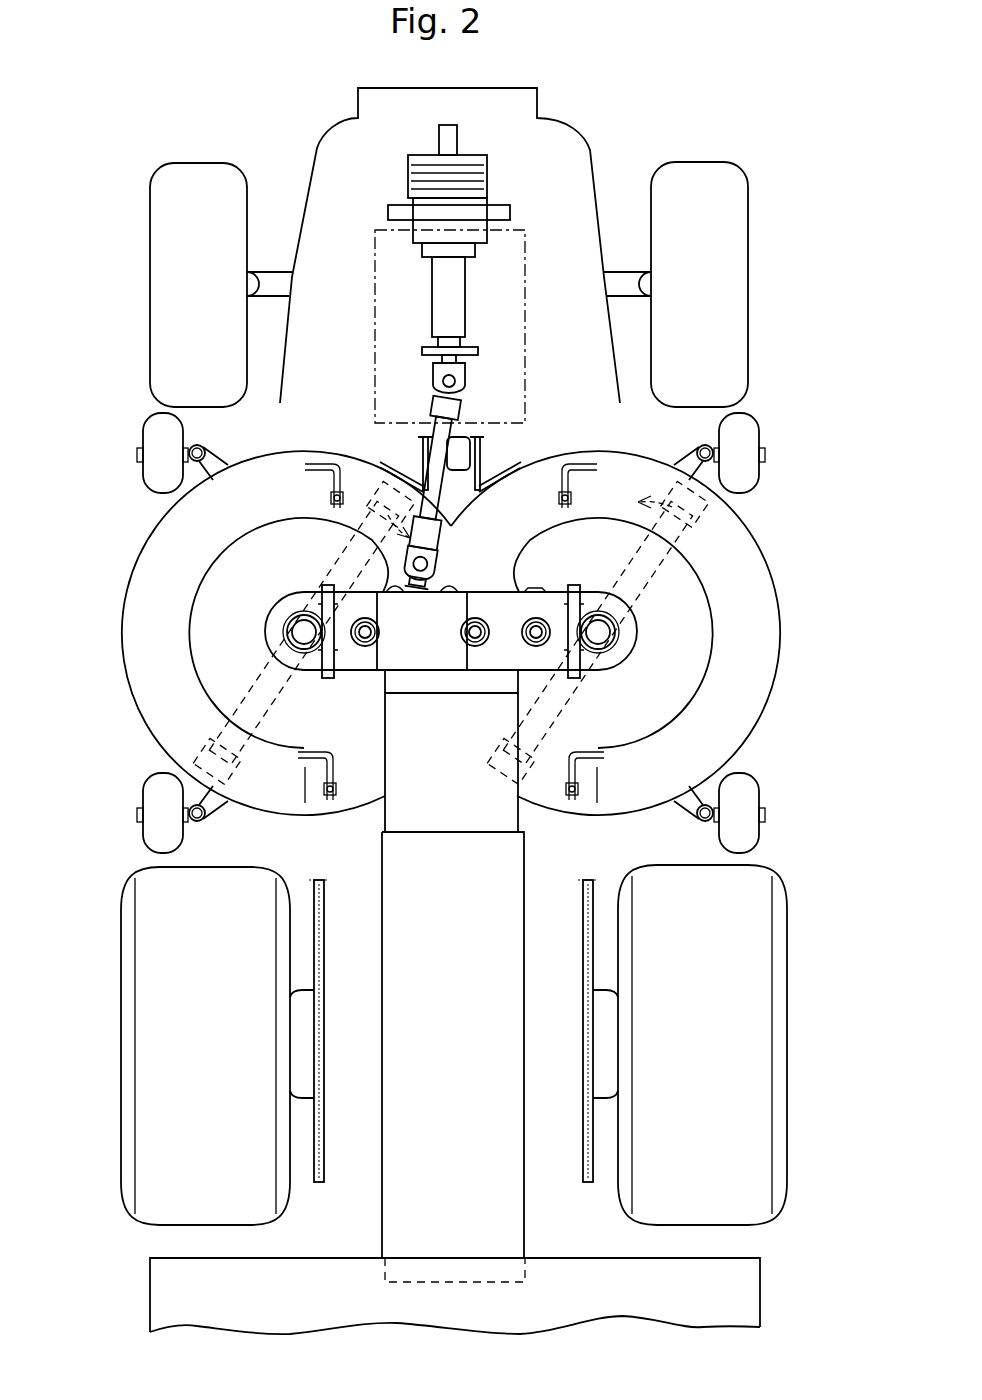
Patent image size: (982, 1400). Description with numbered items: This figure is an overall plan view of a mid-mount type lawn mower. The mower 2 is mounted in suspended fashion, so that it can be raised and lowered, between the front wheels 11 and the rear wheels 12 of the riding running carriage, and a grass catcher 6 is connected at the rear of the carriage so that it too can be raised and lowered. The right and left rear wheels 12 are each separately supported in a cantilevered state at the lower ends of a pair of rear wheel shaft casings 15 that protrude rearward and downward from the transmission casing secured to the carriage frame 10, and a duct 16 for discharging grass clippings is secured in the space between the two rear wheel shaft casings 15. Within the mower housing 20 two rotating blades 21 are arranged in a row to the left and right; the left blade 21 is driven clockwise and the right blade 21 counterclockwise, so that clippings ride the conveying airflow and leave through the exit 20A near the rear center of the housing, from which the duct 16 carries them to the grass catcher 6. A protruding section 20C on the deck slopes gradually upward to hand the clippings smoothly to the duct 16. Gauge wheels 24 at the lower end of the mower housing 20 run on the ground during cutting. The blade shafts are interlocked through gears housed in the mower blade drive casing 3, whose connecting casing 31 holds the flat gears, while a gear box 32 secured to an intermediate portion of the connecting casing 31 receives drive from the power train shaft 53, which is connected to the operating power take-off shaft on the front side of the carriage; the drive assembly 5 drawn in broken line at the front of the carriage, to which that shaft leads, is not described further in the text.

The mower 2 is at (772, 567).
The mower blade drive casing 3 is at (451, 637).
The PTO drive shaft 5 is at (525, 343).
The grass catcher 6 is at (745, 1290).
The carriage frame 10 is at (323, 958).
The front wheels 11 is at (172, 272).
The rear wheels 12 is at (155, 1033).
The rear wheel shaft casings 15 is at (303, 1045).
The duct 16 is at (402, 863).
The mower housing 20 is at (145, 610).
The exit 20A is at (447, 832).
The protruding section 20C is at (482, 682).
The rotating blades 21 is at (252, 690).
The gauge wheels 24 is at (160, 437).
The connecting casing 31 is at (352, 662).
The gear box 32 is at (430, 665).
The power train shaft 53 is at (432, 572).